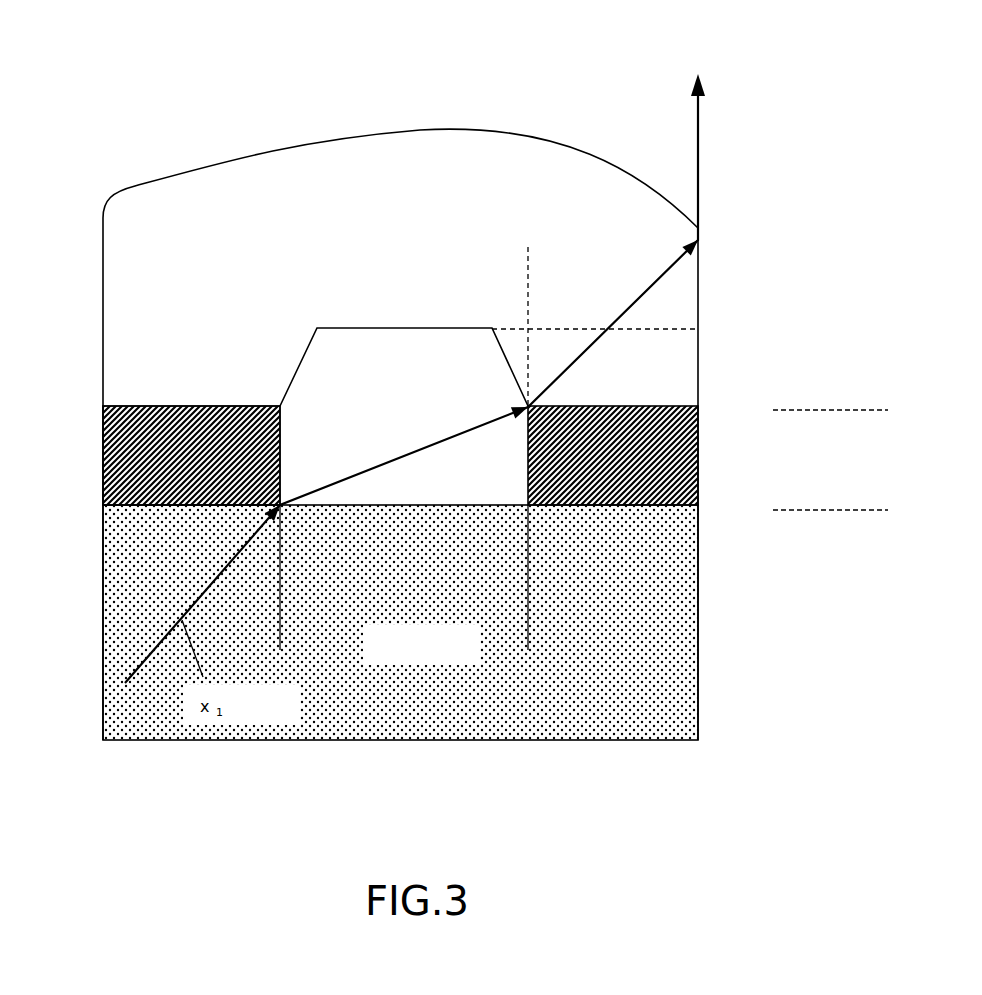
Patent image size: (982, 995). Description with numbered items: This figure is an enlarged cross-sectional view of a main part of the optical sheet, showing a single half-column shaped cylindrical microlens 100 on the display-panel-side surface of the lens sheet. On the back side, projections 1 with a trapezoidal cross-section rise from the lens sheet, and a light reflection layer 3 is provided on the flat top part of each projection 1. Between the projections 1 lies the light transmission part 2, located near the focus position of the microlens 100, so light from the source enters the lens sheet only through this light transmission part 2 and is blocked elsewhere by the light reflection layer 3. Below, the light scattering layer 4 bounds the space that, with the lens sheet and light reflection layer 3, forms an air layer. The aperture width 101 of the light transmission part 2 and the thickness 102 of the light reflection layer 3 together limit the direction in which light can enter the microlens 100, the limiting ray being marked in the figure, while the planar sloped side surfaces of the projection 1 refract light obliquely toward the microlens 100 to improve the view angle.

The microlens 100 is at (200, 170).
The projection 1 is at (400, 428).
The light transmission part 2 is at (338, 430).
The light reflection layer 3 is at (103, 465).
The light scattering layer 4 is at (663, 663).
The aperture width 101 is at (528, 643).
The thickness of light reflection layer 102 is at (811, 352).